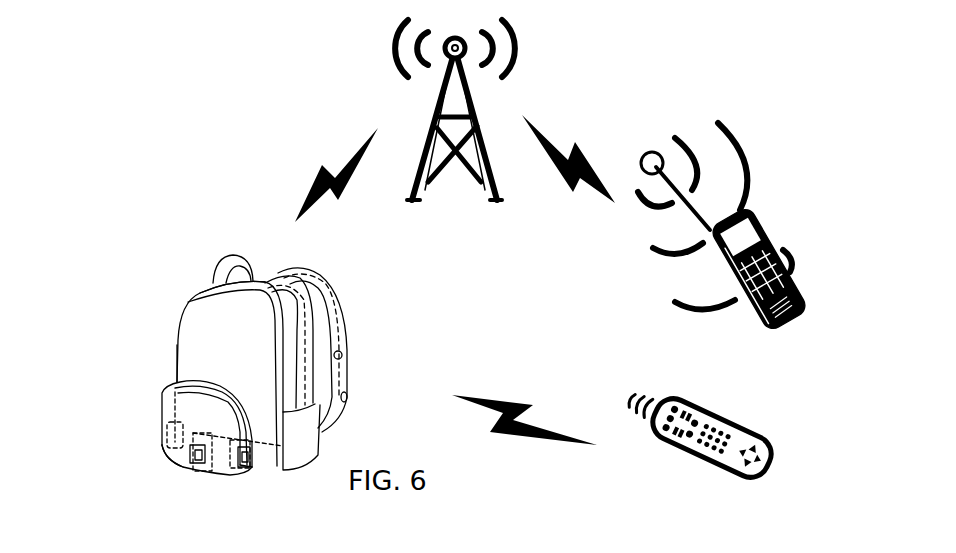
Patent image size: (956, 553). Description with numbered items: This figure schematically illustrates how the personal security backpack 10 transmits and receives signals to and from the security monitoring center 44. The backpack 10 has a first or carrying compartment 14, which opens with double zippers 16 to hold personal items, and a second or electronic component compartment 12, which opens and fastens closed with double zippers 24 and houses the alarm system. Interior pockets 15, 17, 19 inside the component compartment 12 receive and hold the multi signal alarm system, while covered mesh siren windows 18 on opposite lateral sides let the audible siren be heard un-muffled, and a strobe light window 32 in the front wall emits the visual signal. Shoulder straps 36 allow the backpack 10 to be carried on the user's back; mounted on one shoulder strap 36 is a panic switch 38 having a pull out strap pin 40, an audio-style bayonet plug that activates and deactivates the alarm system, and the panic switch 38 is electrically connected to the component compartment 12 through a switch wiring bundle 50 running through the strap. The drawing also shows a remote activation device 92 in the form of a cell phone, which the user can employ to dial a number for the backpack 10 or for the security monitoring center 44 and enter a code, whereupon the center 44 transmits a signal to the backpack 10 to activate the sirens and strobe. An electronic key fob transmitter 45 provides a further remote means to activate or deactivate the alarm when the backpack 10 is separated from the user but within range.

The personal security backpack 10 is at (177, 345).
The component compartment 12 is at (165, 400).
The carrying compartment 14 is at (257, 290).
The interior pocket 15 is at (163, 448).
The double zippers 16 is at (200, 295).
The interior pocket 17 is at (210, 465).
The siren windows 18 is at (167, 430).
The interior pocket 19 is at (244, 470).
The double zippers 24 is at (175, 378).
The strobe light window 32 is at (197, 463).
The shoulder strap 36 is at (278, 272).
The panic switch 38 is at (347, 352).
The pull out strap pin 40 is at (349, 394).
The security monitoring center 44 is at (477, 105).
The electronic key fob transmitter 45 is at (728, 403).
The switch wiring bundle 50 is at (327, 298).
The remote activation device 92 is at (743, 228).